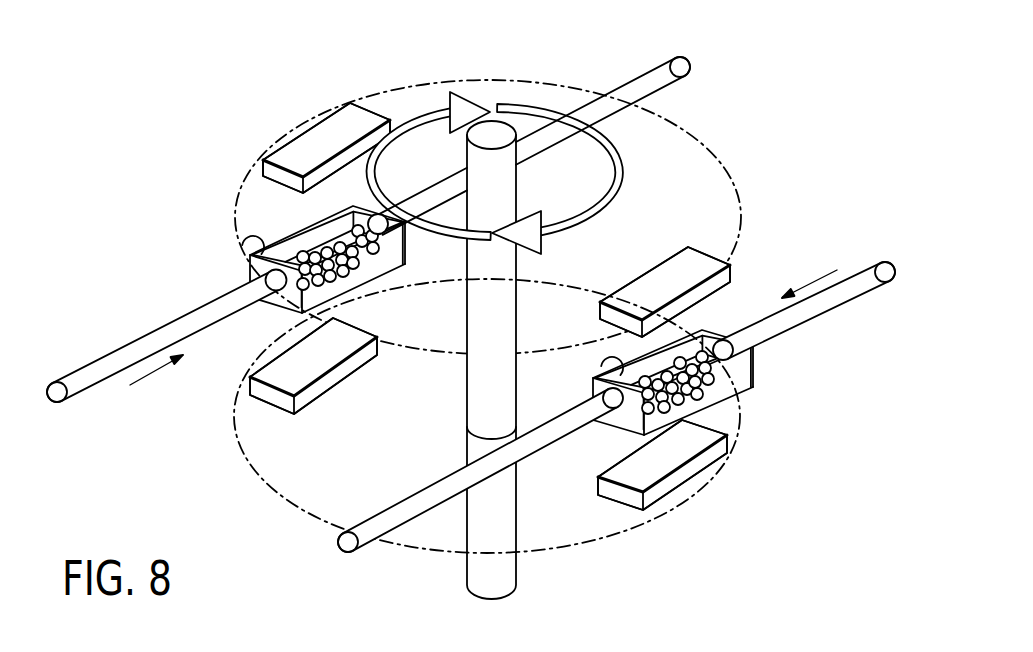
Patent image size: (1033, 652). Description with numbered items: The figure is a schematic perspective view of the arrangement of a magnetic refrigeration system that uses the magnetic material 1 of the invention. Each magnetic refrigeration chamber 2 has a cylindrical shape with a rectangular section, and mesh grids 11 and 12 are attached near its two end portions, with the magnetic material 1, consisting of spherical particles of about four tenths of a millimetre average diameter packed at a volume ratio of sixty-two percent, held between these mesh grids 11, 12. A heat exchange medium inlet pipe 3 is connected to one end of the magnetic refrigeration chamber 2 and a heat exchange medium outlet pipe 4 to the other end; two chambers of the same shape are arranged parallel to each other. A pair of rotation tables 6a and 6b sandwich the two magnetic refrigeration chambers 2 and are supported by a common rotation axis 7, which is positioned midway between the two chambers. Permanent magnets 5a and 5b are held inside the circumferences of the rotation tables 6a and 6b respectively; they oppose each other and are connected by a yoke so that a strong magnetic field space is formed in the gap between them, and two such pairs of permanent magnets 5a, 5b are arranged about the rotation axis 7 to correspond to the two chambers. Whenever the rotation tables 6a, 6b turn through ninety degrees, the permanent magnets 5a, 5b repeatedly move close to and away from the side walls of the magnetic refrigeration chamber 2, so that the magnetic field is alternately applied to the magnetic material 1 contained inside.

The magnetic material 1 is at (487, 286).
The magnetic refrigeration chamber 2 is at (322, 221).
The inlet pipe 3 is at (105, 356).
The outlet pipe 4 is at (648, 72).
The permanent magnet 5a is at (306, 131).
The permanent magnet 5b is at (337, 375).
The rotation table 6a is at (702, 142).
The rotation table 6b is at (259, 477).
The rotation axis 7 is at (517, 568).
The mesh grid 11 is at (372, 211).
The mesh grid 12 is at (241, 247).